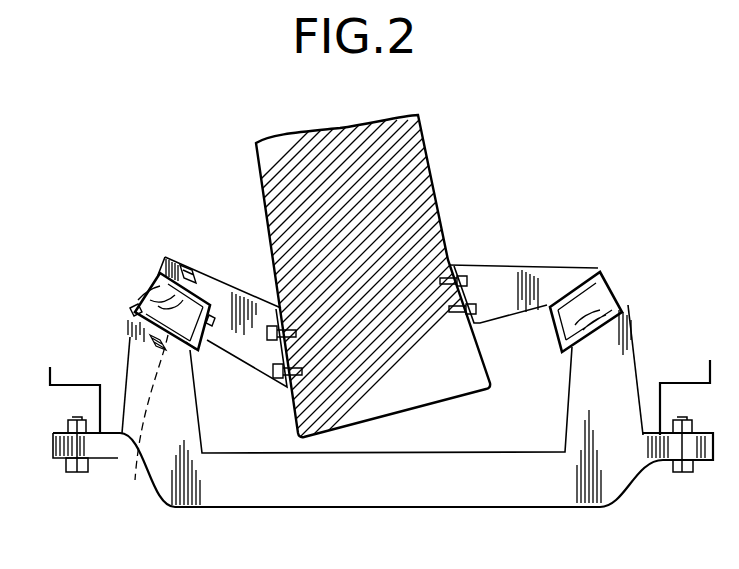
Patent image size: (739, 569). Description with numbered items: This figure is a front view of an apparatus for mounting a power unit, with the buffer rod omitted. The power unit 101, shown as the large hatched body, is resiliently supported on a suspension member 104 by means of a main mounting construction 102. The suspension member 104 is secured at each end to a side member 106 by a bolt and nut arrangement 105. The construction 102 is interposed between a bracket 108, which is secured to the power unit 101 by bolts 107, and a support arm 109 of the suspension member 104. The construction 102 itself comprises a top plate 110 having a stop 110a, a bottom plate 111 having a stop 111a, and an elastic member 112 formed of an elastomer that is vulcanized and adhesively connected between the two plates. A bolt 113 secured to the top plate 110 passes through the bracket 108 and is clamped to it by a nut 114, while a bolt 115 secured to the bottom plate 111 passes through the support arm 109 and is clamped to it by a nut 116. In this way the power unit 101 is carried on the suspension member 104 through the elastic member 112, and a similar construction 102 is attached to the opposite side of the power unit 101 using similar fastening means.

The power unit 101 is at (430, 207).
The main mounting construction 102 is at (136, 302).
The suspension member 104 is at (158, 485).
The bolt and nut arrangement 105 is at (80, 473).
The side member 106 is at (47, 372).
The bolts 107 is at (278, 382).
The bracket 108 is at (233, 282).
The support arm 109 is at (180, 432).
The top plate 110 is at (158, 277).
The stop 110a is at (217, 330).
The bottom plate 111 is at (137, 317).
The stop 111a is at (207, 363).
The elastic member 112 is at (153, 290).
The bolt 113 is at (188, 265).
The nut 114 is at (162, 263).
The bolt 115 is at (123, 365).
The nut 116 is at (138, 480).